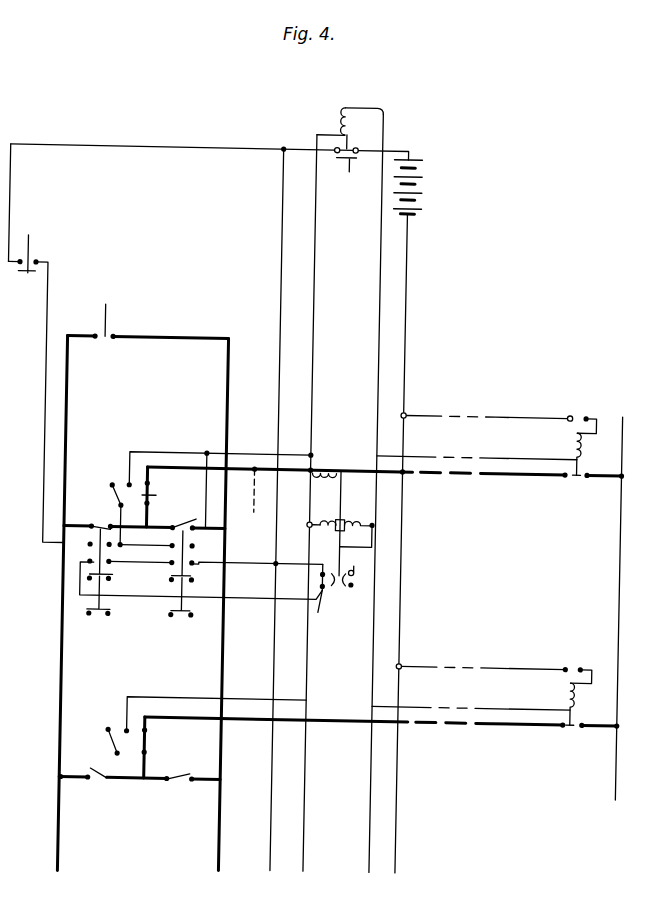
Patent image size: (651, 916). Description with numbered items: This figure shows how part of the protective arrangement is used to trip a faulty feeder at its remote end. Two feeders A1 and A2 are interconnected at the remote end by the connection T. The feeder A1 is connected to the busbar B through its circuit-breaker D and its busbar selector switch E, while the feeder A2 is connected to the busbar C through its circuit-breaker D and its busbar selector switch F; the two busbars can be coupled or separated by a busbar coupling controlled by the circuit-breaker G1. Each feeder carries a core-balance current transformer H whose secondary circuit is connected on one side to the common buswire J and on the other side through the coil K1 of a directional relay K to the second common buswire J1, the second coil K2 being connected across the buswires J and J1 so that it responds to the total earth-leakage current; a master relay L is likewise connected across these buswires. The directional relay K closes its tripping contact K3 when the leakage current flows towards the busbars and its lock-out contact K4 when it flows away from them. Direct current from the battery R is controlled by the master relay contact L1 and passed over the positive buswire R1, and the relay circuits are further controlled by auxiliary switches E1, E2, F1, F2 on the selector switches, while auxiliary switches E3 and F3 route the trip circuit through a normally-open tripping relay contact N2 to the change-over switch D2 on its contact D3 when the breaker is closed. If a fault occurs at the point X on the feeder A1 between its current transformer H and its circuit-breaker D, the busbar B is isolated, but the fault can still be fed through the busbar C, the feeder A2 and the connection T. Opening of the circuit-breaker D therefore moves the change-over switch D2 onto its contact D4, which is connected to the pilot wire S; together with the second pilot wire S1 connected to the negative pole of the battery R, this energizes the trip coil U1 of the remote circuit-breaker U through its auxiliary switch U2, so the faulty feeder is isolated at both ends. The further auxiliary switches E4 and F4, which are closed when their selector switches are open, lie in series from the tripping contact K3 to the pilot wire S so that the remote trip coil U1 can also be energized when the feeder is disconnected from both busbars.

The normally-open contact of tripping relay N N2 is at (26, 267).
The master relay L is at (336, 112).
The normally-open contact of master relay L1 is at (346, 167).
The battery R is at (415, 197).
The positive buswire R1 is at (277, 859).
The buswire J is at (310, 858).
The buswire J1 is at (374, 859).
The connection T is at (621, 592).
The busbar B is at (63, 860).
The busbar C is at (223, 860).
The circuit-breaker G1 is at (106, 333).
The circuit-breaker D is at (149, 486).
The auxiliary change-over switch D2 is at (118, 501).
The contact D3 is at (111, 487).
The contact D4 is at (129, 486).
The busbar selector switch E is at (93, 529).
The auxiliary switch E1 is at (101, 582).
The auxiliary switch E2 is at (95, 618).
The auxiliary switch E3 is at (91, 550).
The auxiliary switch E4 is at (91, 568).
The busbar selector switch F is at (184, 527).
The auxiliary switch F1 is at (190, 580).
The auxiliary switch F2 is at (184, 618).
The auxiliary switch F3 is at (196, 550).
The auxiliary switch F4 is at (201, 567).
The fault point X is at (253, 499).
The feeder A1 is at (430, 475).
The feeder A2 is at (436, 724).
The core-balance current transformer H is at (321, 465).
The directional relay K is at (339, 523).
The coil of directional relay K1 is at (374, 525).
The second coil of directional relay K2 is at (376, 541).
The tripping contact K3 is at (322, 602).
The lock-out contact K4 is at (356, 578).
The pilot wire S is at (417, 453).
The pilot wire S1 is at (437, 413).
The circuit-breaker U is at (583, 472).
The trip coil U1 is at (571, 443).
The auxiliary switch U2 is at (589, 409).